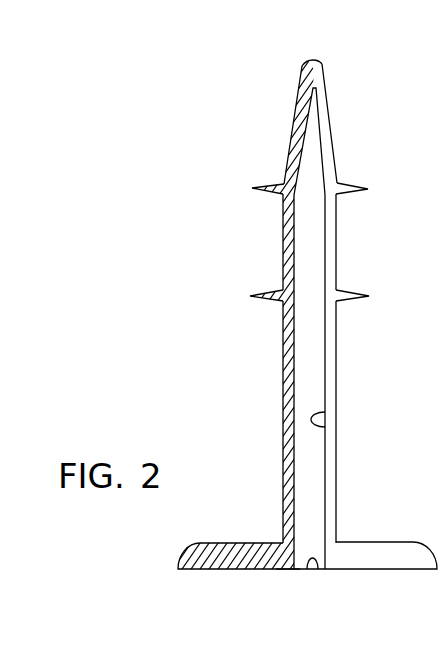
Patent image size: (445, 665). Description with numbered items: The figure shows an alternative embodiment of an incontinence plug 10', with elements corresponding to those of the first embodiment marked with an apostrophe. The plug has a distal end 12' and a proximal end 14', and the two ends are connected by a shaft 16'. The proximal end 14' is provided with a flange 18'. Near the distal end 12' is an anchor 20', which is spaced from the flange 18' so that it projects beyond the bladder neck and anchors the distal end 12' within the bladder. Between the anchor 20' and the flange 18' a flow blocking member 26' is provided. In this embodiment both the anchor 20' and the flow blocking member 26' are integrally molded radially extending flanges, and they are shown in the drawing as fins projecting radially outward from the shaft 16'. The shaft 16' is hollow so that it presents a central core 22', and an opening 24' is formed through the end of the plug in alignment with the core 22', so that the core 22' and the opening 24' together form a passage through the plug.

The incontinence plug 10' is at (272, 331).
The distal end 12' is at (276, 50).
The proximal end 14' is at (279, 598).
The shaft 16' is at (268, 316).
The flange 18' is at (307, 525).
The anchor 20' is at (269, 168).
The central core 22' is at (363, 429).
The opening 24' is at (332, 592).
The flow blocking member 26' is at (331, 324).